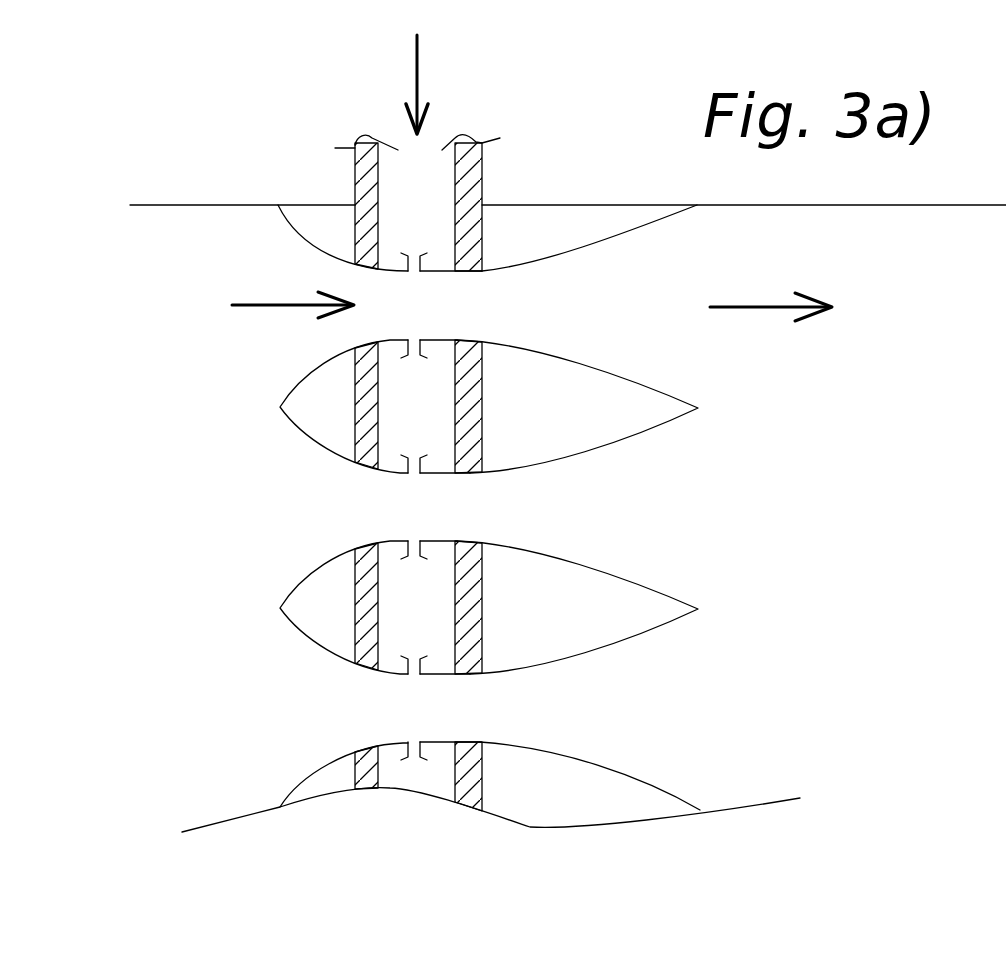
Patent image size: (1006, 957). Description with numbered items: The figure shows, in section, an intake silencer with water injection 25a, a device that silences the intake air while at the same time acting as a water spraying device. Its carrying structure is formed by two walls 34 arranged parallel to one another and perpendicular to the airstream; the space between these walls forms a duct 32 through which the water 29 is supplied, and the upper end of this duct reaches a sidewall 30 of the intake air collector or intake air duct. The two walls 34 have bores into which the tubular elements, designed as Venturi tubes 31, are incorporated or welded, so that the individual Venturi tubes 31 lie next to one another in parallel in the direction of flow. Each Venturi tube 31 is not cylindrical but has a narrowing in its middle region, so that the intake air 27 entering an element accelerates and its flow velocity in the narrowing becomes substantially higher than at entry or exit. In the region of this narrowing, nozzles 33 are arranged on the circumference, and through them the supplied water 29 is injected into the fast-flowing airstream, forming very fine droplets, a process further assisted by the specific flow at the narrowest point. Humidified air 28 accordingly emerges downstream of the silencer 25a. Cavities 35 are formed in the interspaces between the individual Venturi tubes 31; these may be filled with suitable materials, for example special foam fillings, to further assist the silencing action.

The intake silencer with water injection 25a is at (748, 897).
The intake air 27 is at (277, 310).
The humidified air 28 is at (755, 310).
The water supplied 29 is at (422, 70).
The sidewall 30 is at (226, 183).
The Venturi tube 31 is at (628, 347).
The duct for water 32 is at (448, 437).
The nozzles 33 is at (417, 277).
The walls 34 is at (377, 397).
The cavities 35 is at (613, 437).